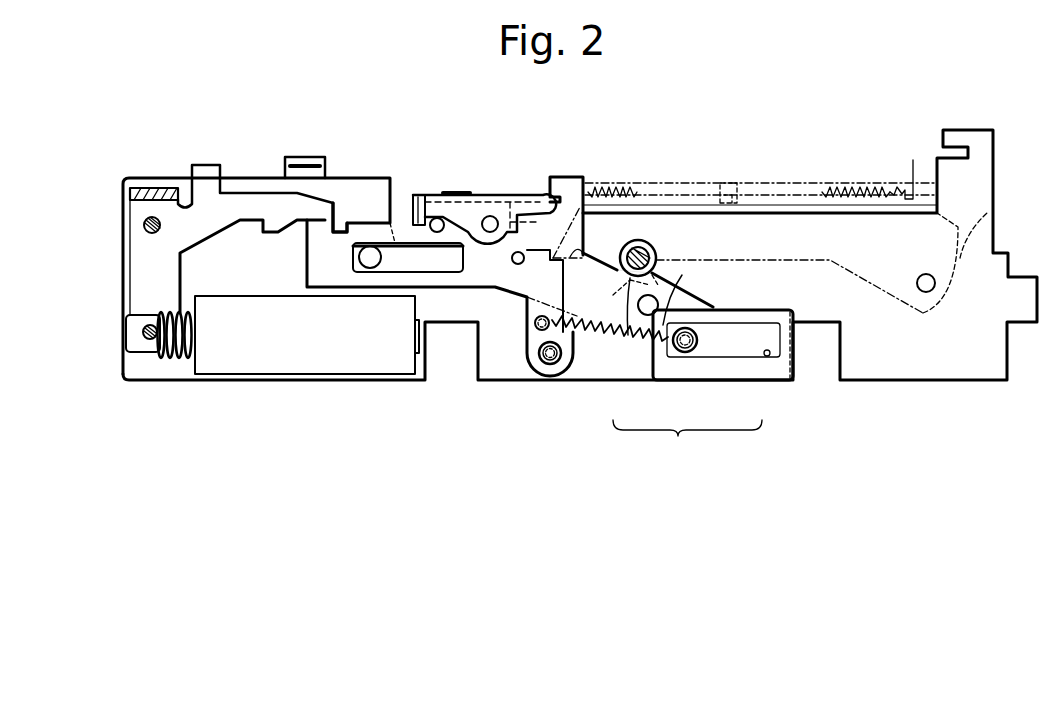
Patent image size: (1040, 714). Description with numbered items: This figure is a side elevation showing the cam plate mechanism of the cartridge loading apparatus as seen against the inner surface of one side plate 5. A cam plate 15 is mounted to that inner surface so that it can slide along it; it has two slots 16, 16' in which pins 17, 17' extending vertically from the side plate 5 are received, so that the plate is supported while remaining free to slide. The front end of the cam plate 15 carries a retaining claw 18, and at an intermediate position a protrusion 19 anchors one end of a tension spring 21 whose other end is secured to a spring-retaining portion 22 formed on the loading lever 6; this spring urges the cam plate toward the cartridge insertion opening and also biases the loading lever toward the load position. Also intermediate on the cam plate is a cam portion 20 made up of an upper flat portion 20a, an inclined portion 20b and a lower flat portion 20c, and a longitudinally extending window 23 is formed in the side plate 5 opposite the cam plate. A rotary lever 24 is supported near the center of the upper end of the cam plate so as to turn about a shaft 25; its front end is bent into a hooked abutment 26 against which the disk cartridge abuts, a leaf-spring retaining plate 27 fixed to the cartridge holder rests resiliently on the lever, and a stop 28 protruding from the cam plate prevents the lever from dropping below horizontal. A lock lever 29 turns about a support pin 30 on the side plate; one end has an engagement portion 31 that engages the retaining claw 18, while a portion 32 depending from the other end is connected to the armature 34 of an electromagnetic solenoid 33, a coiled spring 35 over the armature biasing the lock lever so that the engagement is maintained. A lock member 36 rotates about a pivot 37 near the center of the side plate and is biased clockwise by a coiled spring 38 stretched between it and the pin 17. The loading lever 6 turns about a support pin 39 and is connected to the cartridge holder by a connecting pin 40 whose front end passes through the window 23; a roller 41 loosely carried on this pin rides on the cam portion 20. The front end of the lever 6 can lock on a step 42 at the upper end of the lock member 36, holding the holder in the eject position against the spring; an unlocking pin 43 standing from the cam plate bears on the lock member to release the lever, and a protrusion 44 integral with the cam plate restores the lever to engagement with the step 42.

The side plate 5 is at (948, 380).
The loading lever 6 is at (988, 224).
The cam plate 15 is at (455, 290).
The slot 16 is at (786, 386).
The slot 16' is at (408, 287).
The pin 17 is at (711, 314).
The pin 17' is at (353, 289).
The retaining claw 18 is at (339, 223).
The protrusion 19 is at (560, 177).
The cam portion 20 is at (672, 359).
The upper flat portion 20a is at (629, 340).
The inclined portion 20b is at (662, 345).
The lower flat portion 20c is at (725, 306).
The tension spring 21 is at (848, 186).
The spring-retaining portion 22 is at (910, 165).
The window 23 is at (624, 292).
The rotary lever 24 is at (489, 195).
The shaft 25 is at (495, 218).
The abutment 26 is at (416, 195).
The retaining plate 27 is at (459, 193).
The stop 28 is at (436, 218).
The lock lever 29 is at (248, 192).
The support pin 30 is at (143, 225).
The engagement portion 31 is at (280, 233).
The depending portion 32 is at (143, 295).
The electromagnetic solenoid 33 is at (292, 376).
The armature 34 is at (148, 352).
The coiled spring 35 is at (181, 358).
The lock member 36 is at (525, 323).
The pivot 37 is at (548, 365).
The coiled spring 38 is at (603, 332).
The support pin 39 is at (921, 291).
The connecting pin 40 is at (637, 247).
The roller 41 is at (654, 245).
The step 42 is at (578, 255).
The unlocking pin 43 is at (679, 276).
The protrusion 44 is at (518, 264).